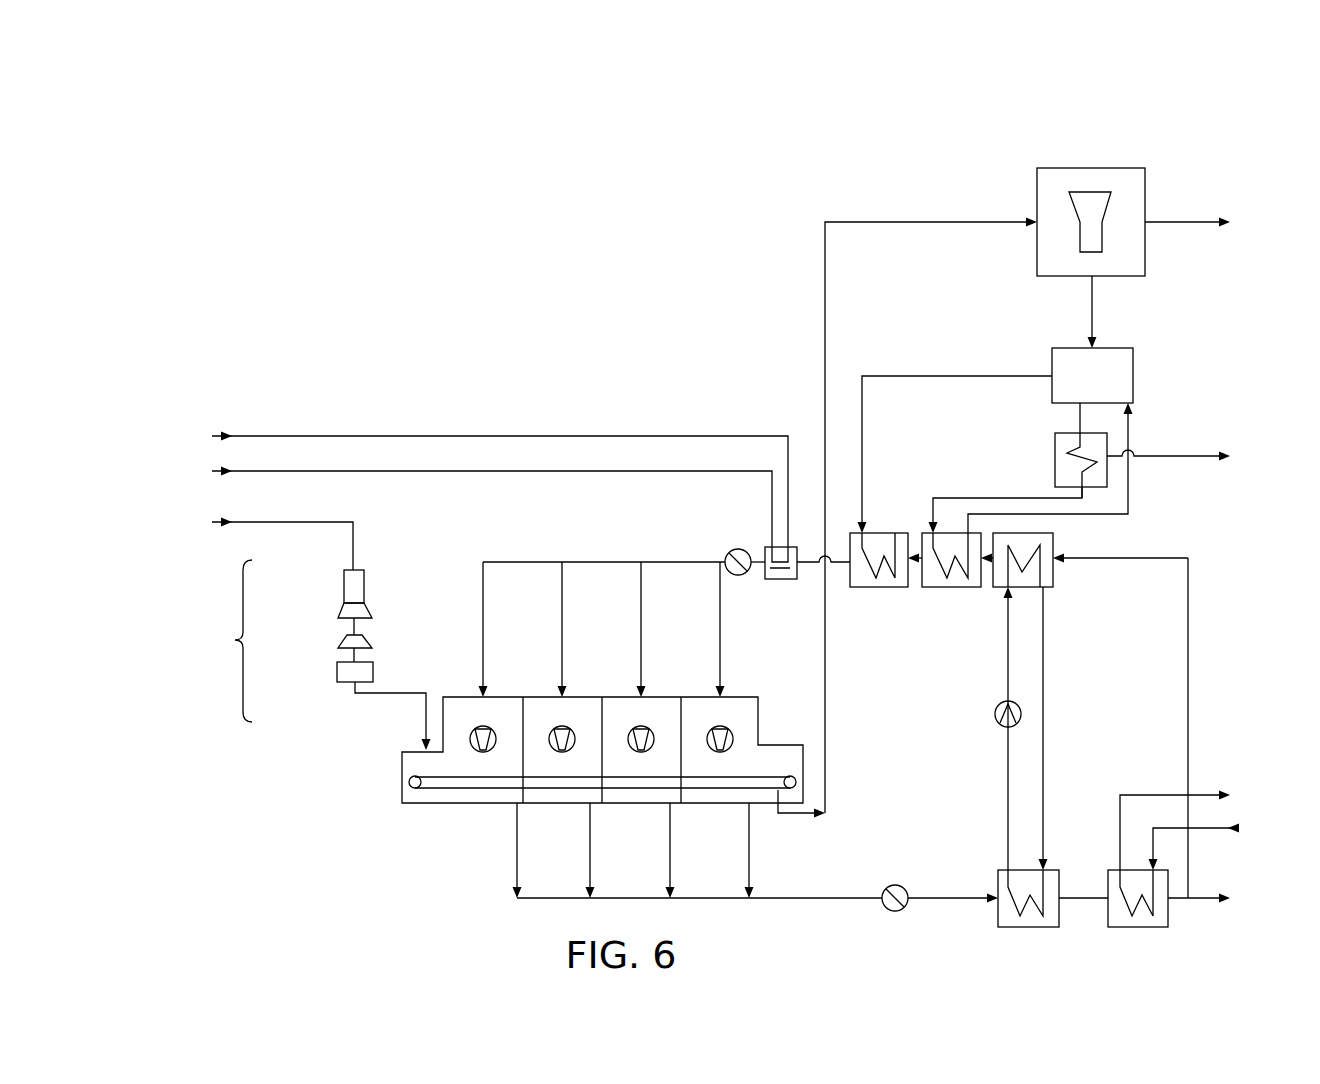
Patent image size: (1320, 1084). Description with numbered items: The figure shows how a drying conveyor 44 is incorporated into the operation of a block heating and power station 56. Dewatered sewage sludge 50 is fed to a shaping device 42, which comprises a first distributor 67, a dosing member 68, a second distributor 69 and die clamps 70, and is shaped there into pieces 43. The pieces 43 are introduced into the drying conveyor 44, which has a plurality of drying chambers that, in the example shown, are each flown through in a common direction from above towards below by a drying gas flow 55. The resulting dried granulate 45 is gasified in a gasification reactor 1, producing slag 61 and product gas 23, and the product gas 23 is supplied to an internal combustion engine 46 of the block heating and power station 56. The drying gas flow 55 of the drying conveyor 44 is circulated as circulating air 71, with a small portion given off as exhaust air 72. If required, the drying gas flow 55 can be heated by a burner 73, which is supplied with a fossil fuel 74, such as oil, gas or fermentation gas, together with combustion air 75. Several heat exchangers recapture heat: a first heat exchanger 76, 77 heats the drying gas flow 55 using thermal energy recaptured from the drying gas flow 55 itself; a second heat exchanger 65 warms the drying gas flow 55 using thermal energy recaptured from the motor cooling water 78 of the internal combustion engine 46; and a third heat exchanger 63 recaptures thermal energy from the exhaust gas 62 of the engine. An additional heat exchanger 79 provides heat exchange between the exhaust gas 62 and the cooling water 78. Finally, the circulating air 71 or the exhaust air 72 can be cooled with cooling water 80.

The gasification reactor 1 is at (1037, 178).
The dried granulate 45 is at (935, 221).
The slag 61 is at (1209, 222).
The product gas 23 is at (1090, 318).
The internal combustion engine 46 is at (1100, 350).
The block heating and power station 56 is at (1133, 388).
The exhaust gas 62 is at (960, 376).
The motor cooling water 78 is at (1028, 497).
The additional heat exchanger 79 is at (1110, 478).
The fossil fuel 74 is at (478, 483).
The combustion air 75 is at (470, 500).
The sewage sludge 50 is at (261, 537).
The burner 73 is at (765, 550).
The drying gas flow 55 is at (680, 562).
The first distributor 67 is at (344, 590).
The dosing member 68 is at (342, 615).
The second distributor 69 is at (340, 650).
The die clamps 70 is at (337, 685).
The shaping device 42 is at (222, 641).
The pieces 43 is at (375, 694).
The drying conveyor 44 is at (437, 803).
The third heat exchanger 63 is at (887, 587).
The second heat exchanger 65 is at (955, 587).
The first heat exchanger 77 is at (1050, 587).
The circulating air 71 is at (1190, 670).
The first heat exchanger 76 is at (998, 870).
The cooling water 80 is at (1195, 852).
The exhaust air 72 is at (1224, 899).